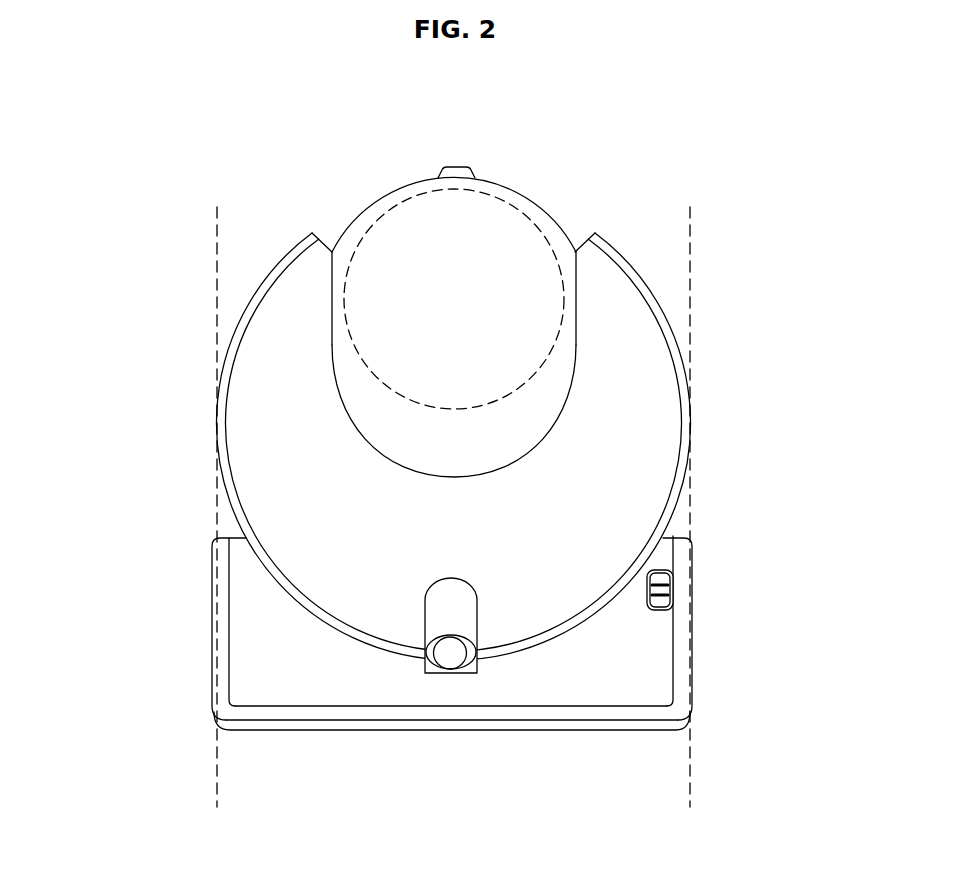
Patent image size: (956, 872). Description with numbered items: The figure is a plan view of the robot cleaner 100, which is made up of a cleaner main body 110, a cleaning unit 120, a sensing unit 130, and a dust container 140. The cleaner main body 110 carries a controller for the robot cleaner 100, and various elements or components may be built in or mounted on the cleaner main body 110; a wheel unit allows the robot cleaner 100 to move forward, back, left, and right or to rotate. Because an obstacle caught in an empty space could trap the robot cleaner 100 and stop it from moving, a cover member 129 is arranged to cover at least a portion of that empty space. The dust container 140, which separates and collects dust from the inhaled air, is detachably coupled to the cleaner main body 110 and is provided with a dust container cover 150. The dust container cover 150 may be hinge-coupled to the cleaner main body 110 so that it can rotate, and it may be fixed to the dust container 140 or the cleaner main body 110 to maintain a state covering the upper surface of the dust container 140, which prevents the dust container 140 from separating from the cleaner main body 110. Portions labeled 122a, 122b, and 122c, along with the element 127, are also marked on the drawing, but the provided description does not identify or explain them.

The robot cleaner 100 is at (290, 172).
The cleaner main body 110 is at (653, 402).
The cleaning unit 120 is at (640, 677).
The front surface of base 122a is at (570, 733).
The right side surface of base 122b is at (693, 662).
The left side surface of base 122c is at (212, 630).
The button 127 is at (660, 577).
The cover member 129 is at (670, 530).
The sensing unit 130 is at (463, 615).
The dust container 140 is at (522, 198).
The dust container cover 150 is at (395, 190).